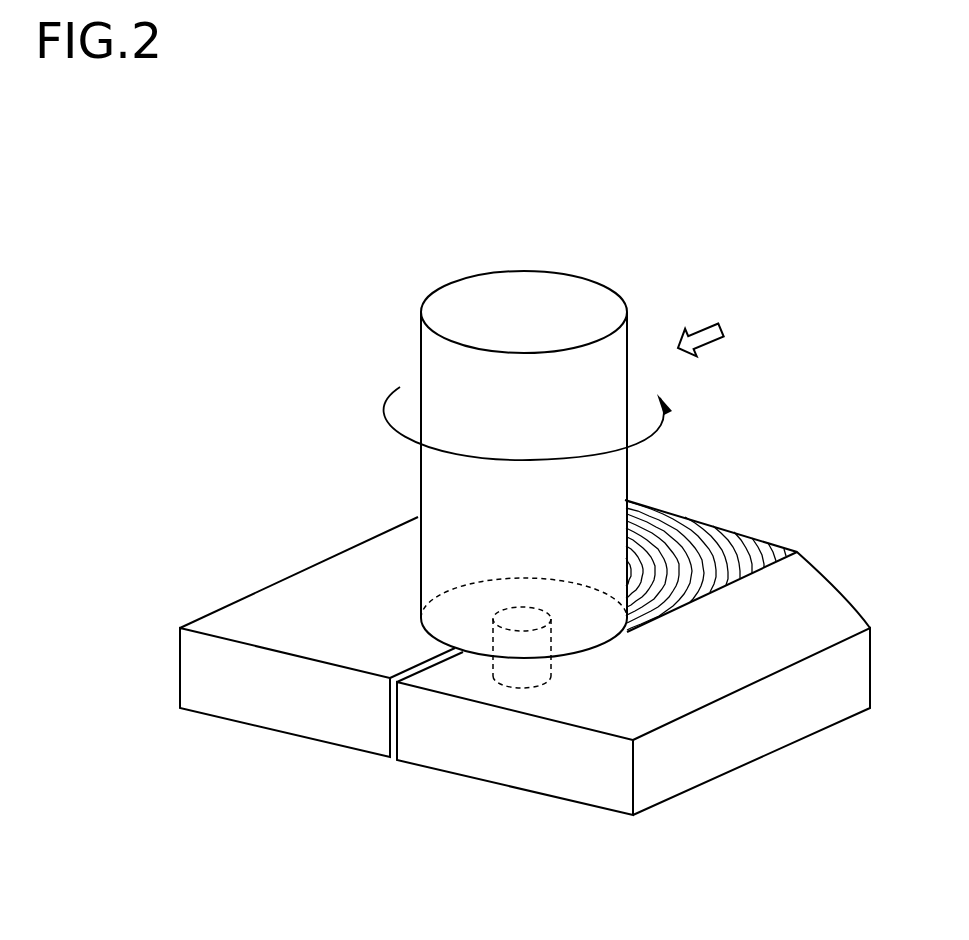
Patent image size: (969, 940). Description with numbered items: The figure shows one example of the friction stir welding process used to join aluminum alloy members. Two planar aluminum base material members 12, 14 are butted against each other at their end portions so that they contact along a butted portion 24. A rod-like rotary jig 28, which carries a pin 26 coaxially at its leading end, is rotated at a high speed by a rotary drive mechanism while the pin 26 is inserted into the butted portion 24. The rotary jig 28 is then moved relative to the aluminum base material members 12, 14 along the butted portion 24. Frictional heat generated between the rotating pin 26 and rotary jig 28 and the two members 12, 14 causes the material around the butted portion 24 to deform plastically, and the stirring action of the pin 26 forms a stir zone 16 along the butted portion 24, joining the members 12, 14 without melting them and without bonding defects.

The planar aluminum base material member 12 is at (275, 628).
The planar aluminum base material member 14 is at (606, 712).
The stir zone 16 is at (711, 530).
The butted portion 24 is at (417, 660).
The pin 26 is at (535, 675).
The rotary jig 28 is at (550, 307).